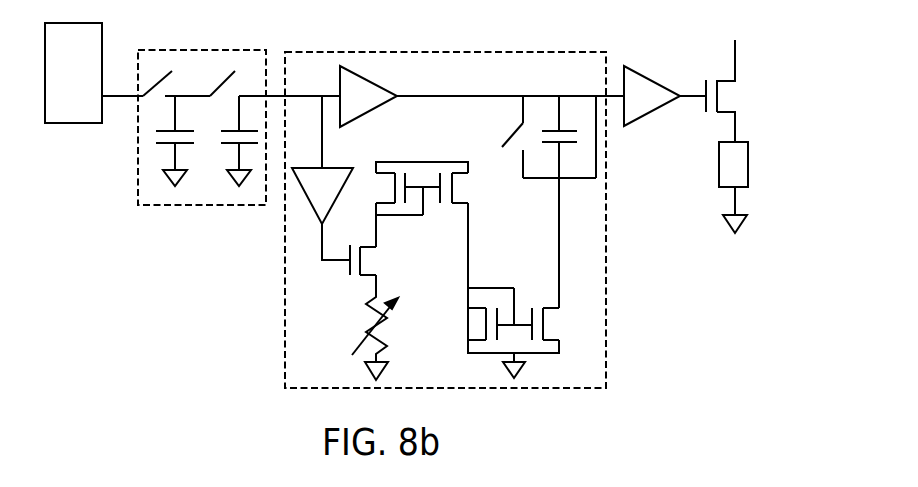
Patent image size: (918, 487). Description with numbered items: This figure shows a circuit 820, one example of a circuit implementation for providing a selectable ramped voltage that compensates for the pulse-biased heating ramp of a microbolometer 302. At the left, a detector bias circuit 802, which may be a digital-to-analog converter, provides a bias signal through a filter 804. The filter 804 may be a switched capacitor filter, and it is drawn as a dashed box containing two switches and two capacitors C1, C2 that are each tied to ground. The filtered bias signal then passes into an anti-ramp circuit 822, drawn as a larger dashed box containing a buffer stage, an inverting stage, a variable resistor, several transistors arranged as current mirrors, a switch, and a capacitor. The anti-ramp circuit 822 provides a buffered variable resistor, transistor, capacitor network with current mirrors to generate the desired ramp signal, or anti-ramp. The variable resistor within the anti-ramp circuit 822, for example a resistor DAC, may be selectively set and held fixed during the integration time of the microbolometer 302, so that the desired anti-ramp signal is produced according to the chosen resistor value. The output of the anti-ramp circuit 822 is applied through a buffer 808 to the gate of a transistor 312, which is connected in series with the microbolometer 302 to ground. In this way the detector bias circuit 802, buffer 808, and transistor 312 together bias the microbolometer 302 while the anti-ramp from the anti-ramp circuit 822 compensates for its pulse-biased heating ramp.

The detector bias circuit 802 is at (83, 123).
The filter 804 is at (202, 159).
The buffer 808 is at (660, 80).
The transistor 312 is at (727, 115).
The microbolometer 302 is at (718, 175).
The circuit 820 is at (158, 300).
The anti-ramp circuit 822 is at (285, 328).
The capacitor C1 is at (167, 141).
The capacitor C2 is at (232, 141).